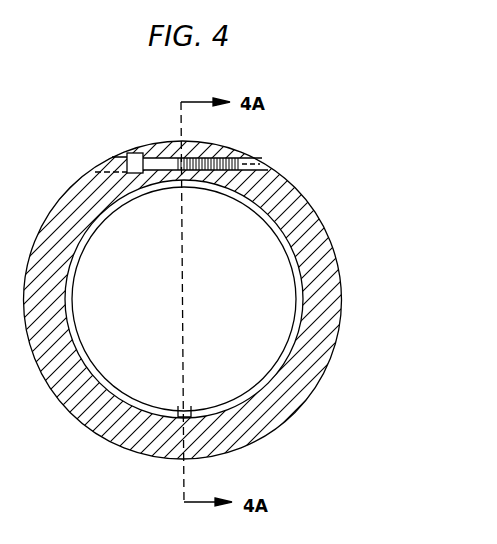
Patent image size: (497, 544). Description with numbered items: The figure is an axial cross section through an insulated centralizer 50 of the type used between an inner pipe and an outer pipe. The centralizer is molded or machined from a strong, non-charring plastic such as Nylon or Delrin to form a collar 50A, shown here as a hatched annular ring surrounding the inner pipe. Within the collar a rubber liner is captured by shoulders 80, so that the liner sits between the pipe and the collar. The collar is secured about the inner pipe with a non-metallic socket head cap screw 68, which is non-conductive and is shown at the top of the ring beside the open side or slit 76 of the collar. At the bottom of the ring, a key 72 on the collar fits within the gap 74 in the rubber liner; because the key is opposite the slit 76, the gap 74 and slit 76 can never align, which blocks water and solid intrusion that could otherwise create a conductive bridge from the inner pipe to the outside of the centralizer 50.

The insulated centralizer 50 is at (248, 264).
The collar 50A is at (320, 227).
The socket head cap screw 68 is at (152, 156).
The slit 76 is at (177, 157).
The shoulders 80 is at (87, 363).
The gap 74 is at (180, 412).
The key 72 is at (190, 412).